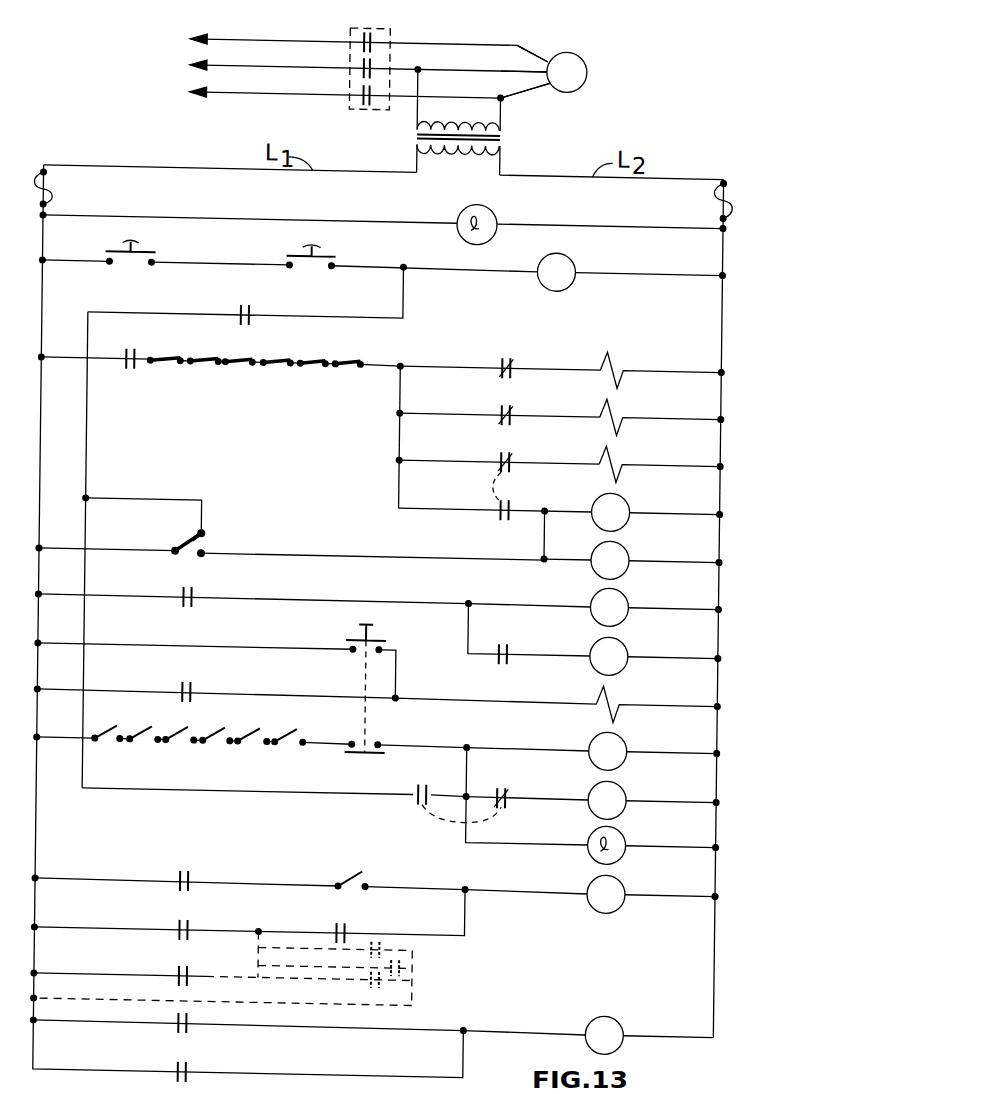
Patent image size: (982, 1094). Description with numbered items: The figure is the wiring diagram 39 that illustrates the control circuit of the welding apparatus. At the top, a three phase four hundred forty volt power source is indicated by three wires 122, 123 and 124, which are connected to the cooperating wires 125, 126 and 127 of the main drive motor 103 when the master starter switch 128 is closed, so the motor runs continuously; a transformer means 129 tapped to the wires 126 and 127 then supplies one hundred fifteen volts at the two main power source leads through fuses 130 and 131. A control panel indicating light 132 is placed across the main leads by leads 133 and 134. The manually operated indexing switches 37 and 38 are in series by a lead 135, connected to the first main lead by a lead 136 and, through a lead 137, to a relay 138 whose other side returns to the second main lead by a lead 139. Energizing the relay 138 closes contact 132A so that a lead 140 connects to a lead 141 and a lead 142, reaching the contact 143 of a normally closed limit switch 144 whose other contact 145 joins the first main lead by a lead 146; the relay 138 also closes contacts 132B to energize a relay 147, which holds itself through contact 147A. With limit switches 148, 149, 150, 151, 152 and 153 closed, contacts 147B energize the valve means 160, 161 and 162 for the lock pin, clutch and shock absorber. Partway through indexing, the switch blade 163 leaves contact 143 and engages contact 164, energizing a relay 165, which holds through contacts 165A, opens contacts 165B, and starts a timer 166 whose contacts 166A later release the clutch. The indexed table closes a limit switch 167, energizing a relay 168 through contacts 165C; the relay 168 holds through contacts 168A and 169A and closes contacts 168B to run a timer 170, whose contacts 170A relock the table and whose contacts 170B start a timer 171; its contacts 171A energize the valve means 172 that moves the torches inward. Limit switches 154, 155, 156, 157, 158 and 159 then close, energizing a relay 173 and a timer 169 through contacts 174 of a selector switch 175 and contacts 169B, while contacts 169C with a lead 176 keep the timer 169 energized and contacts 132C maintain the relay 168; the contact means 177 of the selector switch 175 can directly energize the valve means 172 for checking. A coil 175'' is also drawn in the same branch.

The wire 122 is at (298, 36).
The wire 123 is at (324, 62).
The wire 124 is at (306, 89).
The wire 125 is at (514, 36).
The wire 126 is at (500, 62).
The wire 127 is at (538, 80).
The main drive motor 103 is at (586, 59).
The master starter switch 128 is at (388, 104).
The transformer means 129 is at (507, 130).
The wiring diagram 39 is at (668, 144).
The fuse 130 is at (50, 189).
The fuse 131 is at (730, 198).
The control panel indicating light 132 is at (495, 206).
The lead 133 is at (350, 215).
The lead 134 is at (598, 215).
The lead 135 is at (220, 260).
The lead 136 is at (98, 262).
The lead 137 is at (458, 266).
The relay 138 is at (575, 253).
The lead 139 is at (638, 265).
The lead 140 is at (315, 311).
The lead 141 is at (89, 453).
The lead 142 is at (150, 497).
The manually operated electrical switch 37 is at (158, 249).
The manually operated electrical switch 38 is at (341, 251).
The contact 132A is at (258, 304).
The contacts 132B is at (212, 1015).
The normally closed contacts 132C is at (189, 964).
The normally opened contacts 147B is at (141, 345).
The normally opened contact 147A is at (209, 1062).
The relay 147 is at (625, 1007).
The limit switch 148 is at (175, 364).
The limit switch 149 is at (200, 364).
The limit switch 150 is at (245, 364).
The limit switch 151 is at (273, 364).
The limit switch 152 is at (322, 364).
The limit switch 153 is at (355, 364).
The normally closed contacts 170A is at (519, 352).
The electrically operated valve means 160 is at (629, 349).
The normally closed contacts 166A is at (519, 400).
The electrically operated valve means 161 is at (629, 399).
The normally closed contacts 165B is at (519, 446).
The electrically operated valve means 162 is at (629, 445).
The normally opened contacts 165A is at (520, 495).
The timer 166 is at (630, 493).
The contact 143 is at (208, 522).
The normally closed limit switch 144 is at (216, 531).
The contact 145 is at (177, 556).
The lead 146 is at (115, 548).
The switch blade 163 is at (222, 536).
The normally opened contact 164 is at (210, 556).
The relay 165 is at (632, 541).
The normally opened contacts 168B is at (206, 606).
The timer 170 is at (632, 587).
The normally opened contacts 170B is at (521, 636).
The timer 171 is at (632, 635).
The selector switch 175 is at (233, 629).
The contact means 177 is at (396, 641).
The normally open contacts 171A is at (204, 684).
The electrically operated valve means 172 is at (628, 688).
The limit switch 154 is at (118, 744).
The limit switch 155 is at (132, 727).
The limit switch 156 is at (182, 744).
The limit switch 157 is at (204, 727).
The limit switch 158 is at (256, 744).
The limit switch 159 is at (278, 729).
The normally closed contacts 174 is at (389, 737).
The timer 169 is at (632, 734).
The lead 176 is at (272, 790).
The contacts 169C is at (440, 777).
The normally closed contacts 169B is at (521, 783).
The relay 173 is at (632, 781).
The relay coil 175'' is at (592, 807).
The normally opened contacts 165C is at (209, 872).
The limit switch 167 is at (364, 864).
The relay 168 is at (632, 871).
The normally closed contacts 169A is at (206, 920).
The normally opened contacts 168A is at (366, 922).